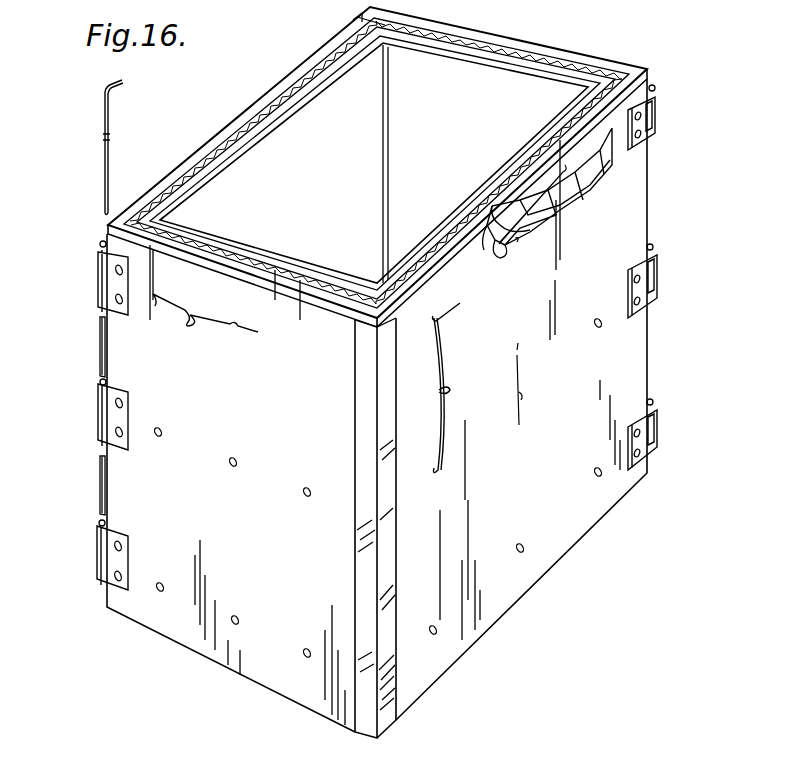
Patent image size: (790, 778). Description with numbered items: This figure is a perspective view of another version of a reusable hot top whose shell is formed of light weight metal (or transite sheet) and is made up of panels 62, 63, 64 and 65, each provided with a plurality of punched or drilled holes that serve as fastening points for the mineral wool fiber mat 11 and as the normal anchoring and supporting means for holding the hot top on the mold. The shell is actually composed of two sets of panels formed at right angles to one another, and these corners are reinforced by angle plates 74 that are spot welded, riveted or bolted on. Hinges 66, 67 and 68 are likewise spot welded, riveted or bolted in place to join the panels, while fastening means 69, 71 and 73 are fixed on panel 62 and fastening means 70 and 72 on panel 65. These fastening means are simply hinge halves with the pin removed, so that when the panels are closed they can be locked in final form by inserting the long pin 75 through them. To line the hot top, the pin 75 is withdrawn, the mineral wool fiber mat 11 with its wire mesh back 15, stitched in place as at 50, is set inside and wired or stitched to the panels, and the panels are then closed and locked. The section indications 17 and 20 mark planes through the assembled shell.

The mineral wool fiber mat 11 is at (294, 110).
The wire mesh back 15 is at (550, 162).
The section line 17 is at (621, 149).
The section line 20 is at (160, 365).
The stitching 50 is at (494, 208).
The panel 62 is at (240, 429).
The panel 63 is at (533, 477).
The panel 64 is at (522, 50).
The panel 65 is at (248, 110).
The hinge 66 is at (658, 414).
The hinge 67 is at (658, 258).
The hinge 68 is at (657, 100).
The fastening means 69 is at (102, 254).
The fastening means 70 is at (98, 356).
The fastening means 71 is at (110, 416).
The fastening means 72 is at (100, 480).
The fastening means 73 is at (115, 556).
The angle plate 74 is at (392, 20).
The long pin 75 is at (110, 136).